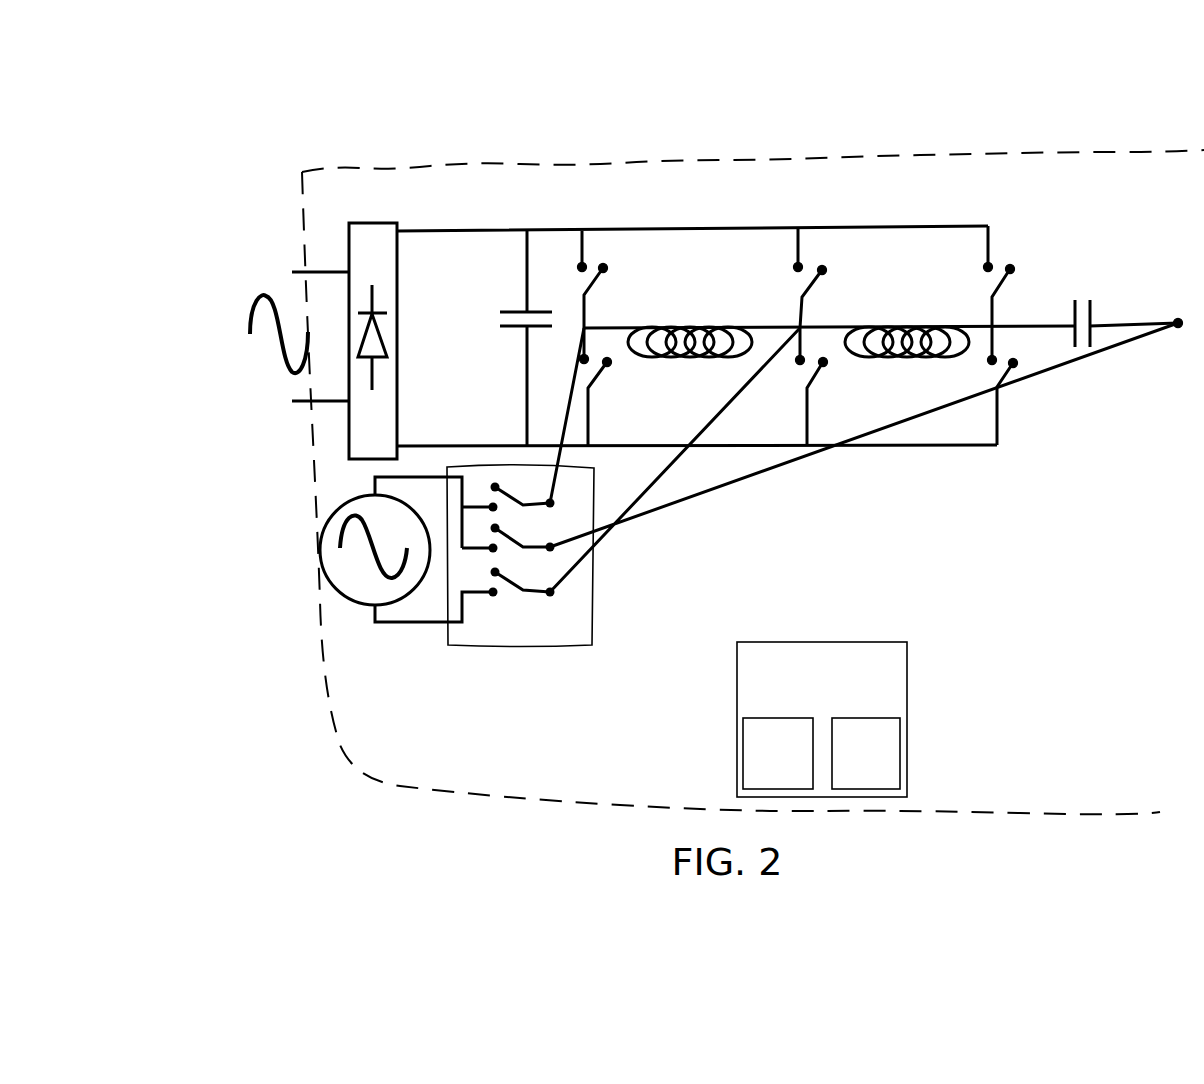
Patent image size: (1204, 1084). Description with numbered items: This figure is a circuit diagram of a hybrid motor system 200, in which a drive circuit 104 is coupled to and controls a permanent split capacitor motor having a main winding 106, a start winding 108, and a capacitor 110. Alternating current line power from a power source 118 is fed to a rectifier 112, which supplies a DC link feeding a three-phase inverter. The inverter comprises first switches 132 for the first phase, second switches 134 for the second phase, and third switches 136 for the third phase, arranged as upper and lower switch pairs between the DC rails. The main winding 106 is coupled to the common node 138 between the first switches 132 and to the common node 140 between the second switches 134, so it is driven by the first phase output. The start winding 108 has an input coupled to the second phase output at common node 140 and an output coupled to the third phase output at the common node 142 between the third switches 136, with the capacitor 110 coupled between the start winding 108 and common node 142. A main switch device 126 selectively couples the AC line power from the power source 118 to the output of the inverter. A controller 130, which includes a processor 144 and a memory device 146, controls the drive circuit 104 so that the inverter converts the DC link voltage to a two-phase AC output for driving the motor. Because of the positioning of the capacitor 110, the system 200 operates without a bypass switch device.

The hybrid motor system 200 is at (247, 73).
The drive circuit 104 is at (1038, 150).
The rectifier 112 is at (358, 223).
The power source 118 is at (222, 338).
The first switches 132 is at (604, 266).
The second switches 134 is at (823, 268).
The third switches 136 is at (1012, 267).
The common node 138 is at (586, 324).
The common node 140 is at (802, 324).
The common node 142 is at (994, 324).
The main winding 106 is at (676, 288).
The start winding 108 is at (895, 289).
The capacitor 110 is at (1080, 282).
The main switch device 126 is at (595, 580).
The controller 130 is at (851, 719).
The processor 144 is at (796, 766).
The memory device 146 is at (889, 768).